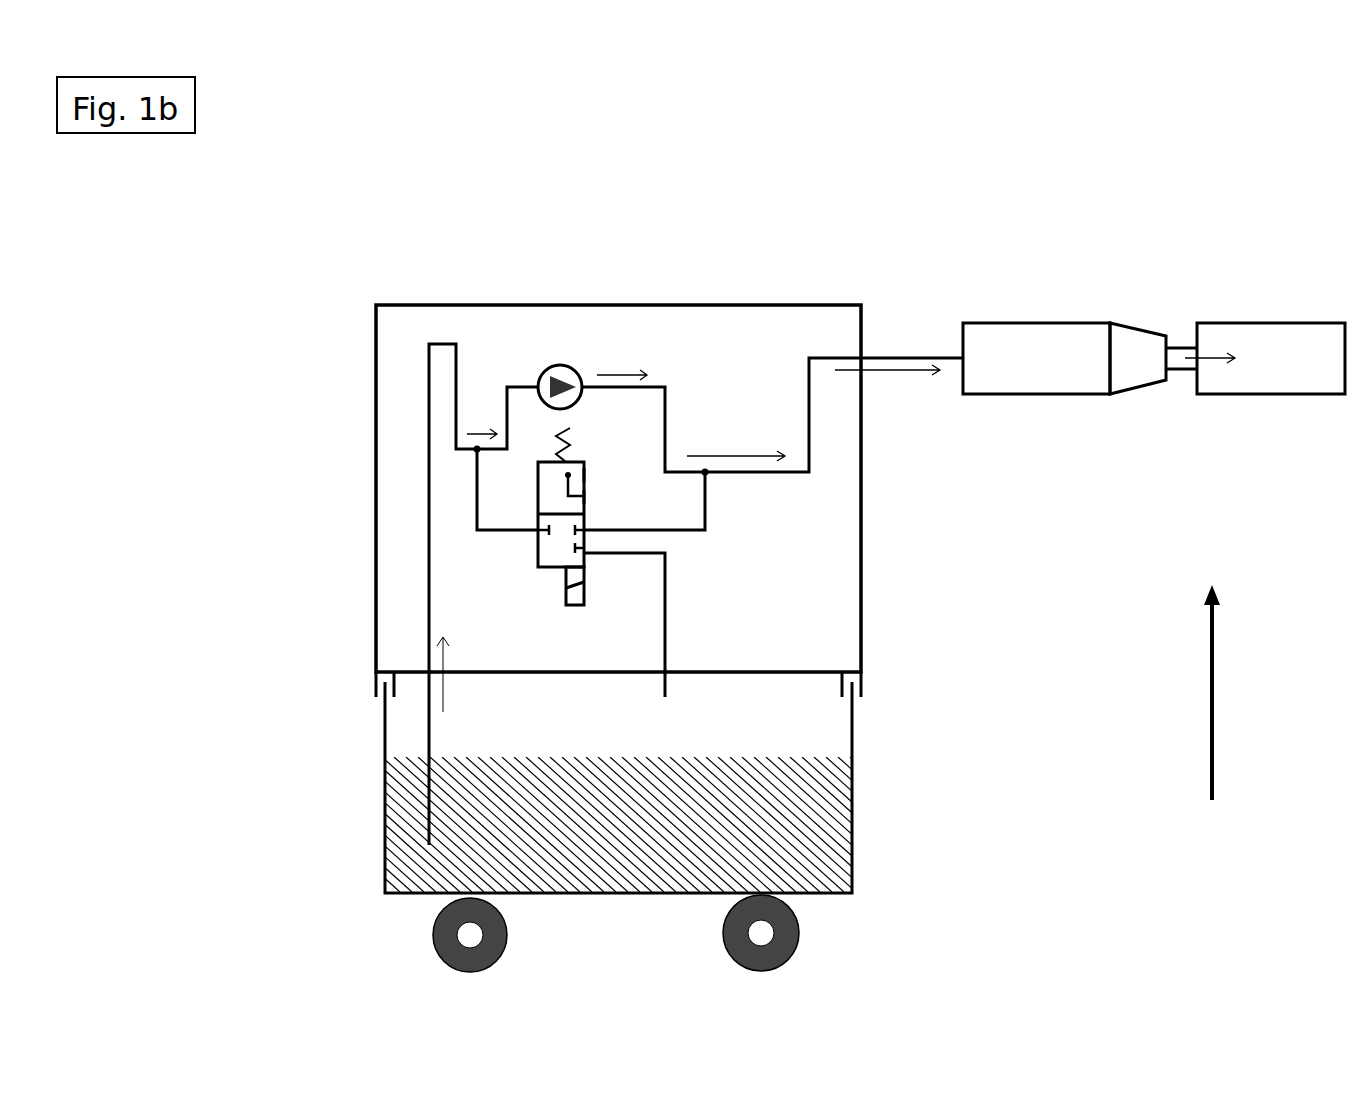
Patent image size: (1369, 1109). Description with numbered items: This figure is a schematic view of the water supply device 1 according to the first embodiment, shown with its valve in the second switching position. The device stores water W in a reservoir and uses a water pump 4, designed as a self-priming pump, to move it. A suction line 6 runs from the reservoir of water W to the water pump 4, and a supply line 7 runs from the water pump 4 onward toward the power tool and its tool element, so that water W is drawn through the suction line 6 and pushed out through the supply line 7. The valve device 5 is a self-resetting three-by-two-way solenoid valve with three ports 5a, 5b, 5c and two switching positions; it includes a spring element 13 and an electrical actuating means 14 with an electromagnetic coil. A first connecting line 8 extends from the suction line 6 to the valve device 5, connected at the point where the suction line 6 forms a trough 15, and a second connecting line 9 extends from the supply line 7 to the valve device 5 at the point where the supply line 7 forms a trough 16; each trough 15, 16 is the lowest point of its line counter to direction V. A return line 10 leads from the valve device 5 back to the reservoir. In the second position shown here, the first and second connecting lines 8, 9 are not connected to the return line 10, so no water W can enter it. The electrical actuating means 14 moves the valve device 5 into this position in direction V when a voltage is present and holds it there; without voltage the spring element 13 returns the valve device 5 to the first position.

The water supply device 1 is at (360, 243).
The water pump 4 is at (563, 367).
The valve device 5 is at (545, 558).
The port 5a is at (560, 475).
The port 5b is at (587, 475).
The port 5c is at (590, 500).
The suction line 6 is at (429, 368).
The supply line 7 is at (663, 385).
The first connecting line 8 is at (474, 510).
The second connecting line 9 is at (705, 512).
The return line 10 is at (668, 620).
The spring element 13 is at (555, 443).
The electrical actuating means 14 is at (572, 598).
The trough 15 is at (465, 441).
The trough 16 is at (733, 465).
The water W is at (410, 874).
The direction V is at (1223, 692).